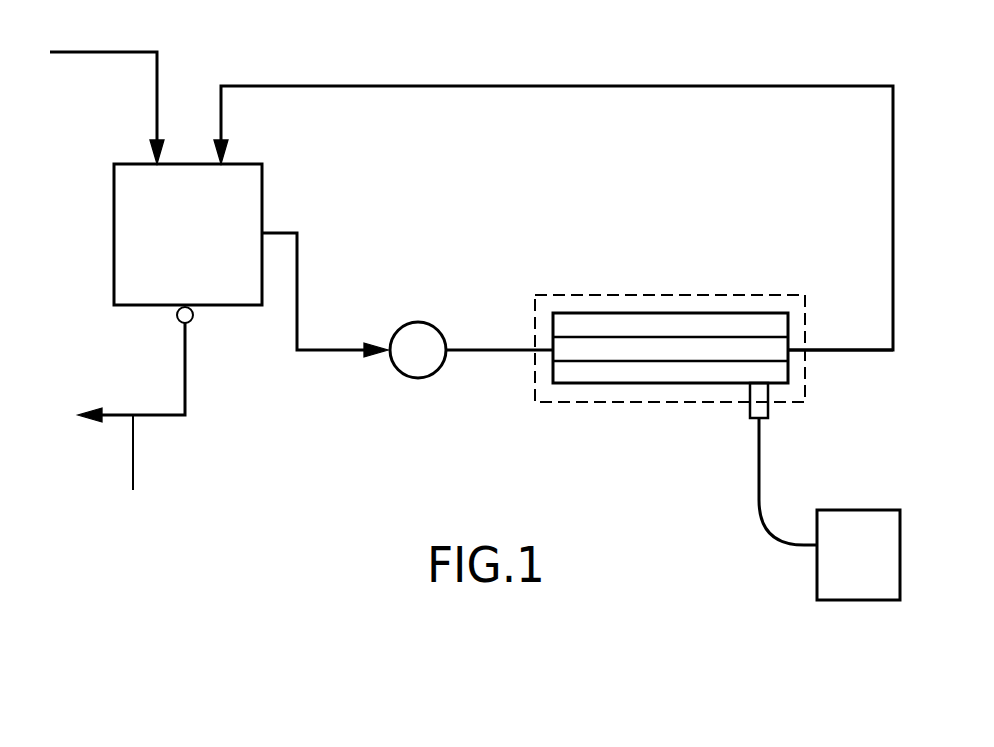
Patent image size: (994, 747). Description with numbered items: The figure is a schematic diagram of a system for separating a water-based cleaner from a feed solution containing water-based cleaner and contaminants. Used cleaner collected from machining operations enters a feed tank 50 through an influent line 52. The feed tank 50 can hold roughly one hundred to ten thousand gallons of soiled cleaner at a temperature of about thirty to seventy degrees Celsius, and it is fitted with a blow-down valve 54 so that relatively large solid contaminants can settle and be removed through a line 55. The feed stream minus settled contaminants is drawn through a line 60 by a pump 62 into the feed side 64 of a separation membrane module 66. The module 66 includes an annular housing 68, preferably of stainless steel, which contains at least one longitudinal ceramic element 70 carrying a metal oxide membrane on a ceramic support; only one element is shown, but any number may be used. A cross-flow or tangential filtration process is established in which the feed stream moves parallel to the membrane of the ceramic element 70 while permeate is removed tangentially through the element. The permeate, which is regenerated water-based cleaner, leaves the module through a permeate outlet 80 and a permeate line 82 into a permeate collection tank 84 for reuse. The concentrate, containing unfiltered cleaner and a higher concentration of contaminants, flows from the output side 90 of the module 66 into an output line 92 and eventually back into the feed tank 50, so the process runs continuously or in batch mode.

The feed tank 50 is at (114, 228).
The influent line 52 is at (146, 50).
The blow-down valve 54 is at (178, 318).
The line 55 is at (180, 474).
The line 60 is at (297, 265).
The pump 62 is at (418, 322).
The feed side 64 is at (553, 322).
The separation membrane module 66 is at (583, 256).
The annular housing 68 is at (655, 313).
The ceramic element 70 is at (712, 337).
The permeate outlet 80 is at (752, 420).
The permeate line 82 is at (757, 500).
The permeate collection tank 84 is at (875, 600).
The output side 90 is at (788, 327).
The output line 92 is at (680, 85).